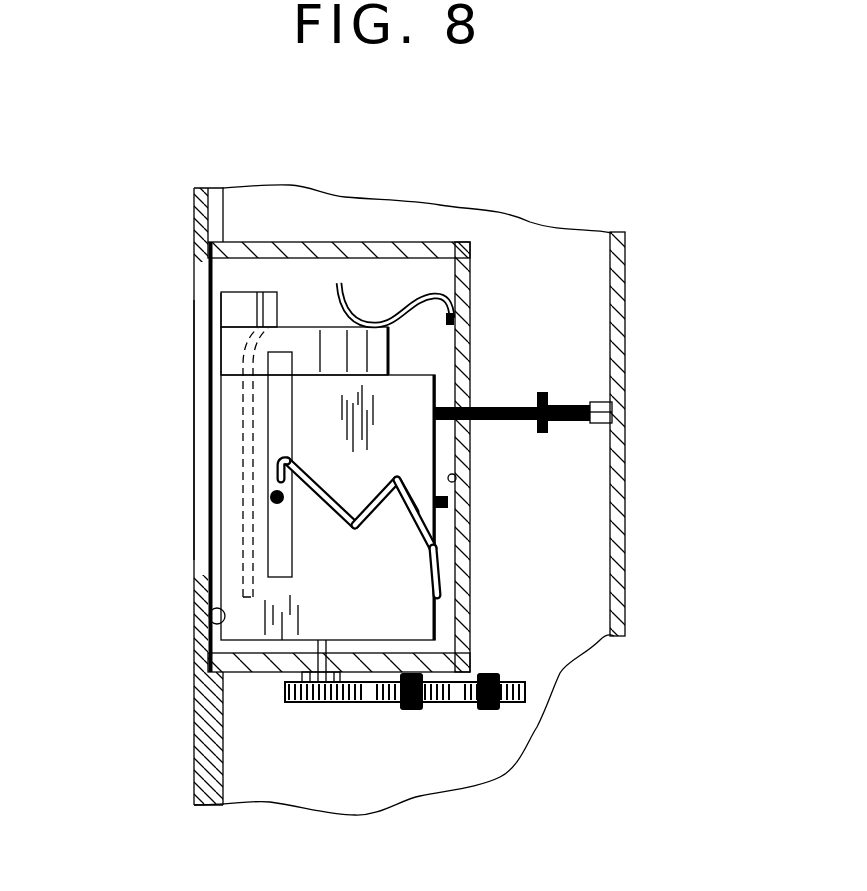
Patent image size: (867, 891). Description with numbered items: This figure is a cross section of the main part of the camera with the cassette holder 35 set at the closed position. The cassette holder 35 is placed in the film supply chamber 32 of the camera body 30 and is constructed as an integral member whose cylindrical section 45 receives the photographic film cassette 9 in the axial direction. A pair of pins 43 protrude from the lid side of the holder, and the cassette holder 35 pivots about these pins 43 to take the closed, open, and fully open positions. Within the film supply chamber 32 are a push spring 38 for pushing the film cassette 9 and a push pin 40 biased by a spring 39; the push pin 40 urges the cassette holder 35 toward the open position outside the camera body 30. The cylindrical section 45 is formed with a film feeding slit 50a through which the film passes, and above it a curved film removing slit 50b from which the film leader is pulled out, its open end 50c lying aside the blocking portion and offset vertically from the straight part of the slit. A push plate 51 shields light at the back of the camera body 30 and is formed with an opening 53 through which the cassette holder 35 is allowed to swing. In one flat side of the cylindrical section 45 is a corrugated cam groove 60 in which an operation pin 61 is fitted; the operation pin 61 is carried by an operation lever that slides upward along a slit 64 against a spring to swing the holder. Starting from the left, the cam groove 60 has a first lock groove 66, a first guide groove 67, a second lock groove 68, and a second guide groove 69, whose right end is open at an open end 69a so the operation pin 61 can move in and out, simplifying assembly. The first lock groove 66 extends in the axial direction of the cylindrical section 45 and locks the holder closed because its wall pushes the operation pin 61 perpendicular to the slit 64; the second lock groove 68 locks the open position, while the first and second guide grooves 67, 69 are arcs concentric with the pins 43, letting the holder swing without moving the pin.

The push plate 51 is at (193, 221).
The opening 53 is at (209, 275).
The open end 50c is at (260, 292).
The photographic film cassette 9 is at (313, 300).
The push spring 38 is at (348, 303).
The film removing slit 50b is at (222, 349).
The slit 64 is at (292, 357).
The push pin 40 is at (458, 395).
The spring 39 is at (577, 401).
The cassette holder 35 is at (181, 427).
The first lock groove 66 is at (276, 478).
The film supply chamber 32 is at (457, 478).
The cam groove 60 is at (448, 503).
The camera body 30 is at (633, 538).
The film feeding slit 50a is at (243, 540).
The cylindrical section 45 is at (222, 585).
The pins 43 is at (209, 617).
The first guide groove 67 is at (324, 489).
The second lock groove 68 is at (383, 480).
The operation pin 61 is at (278, 504).
The second guide groove 69 is at (418, 514).
The open end 69a is at (438, 549).